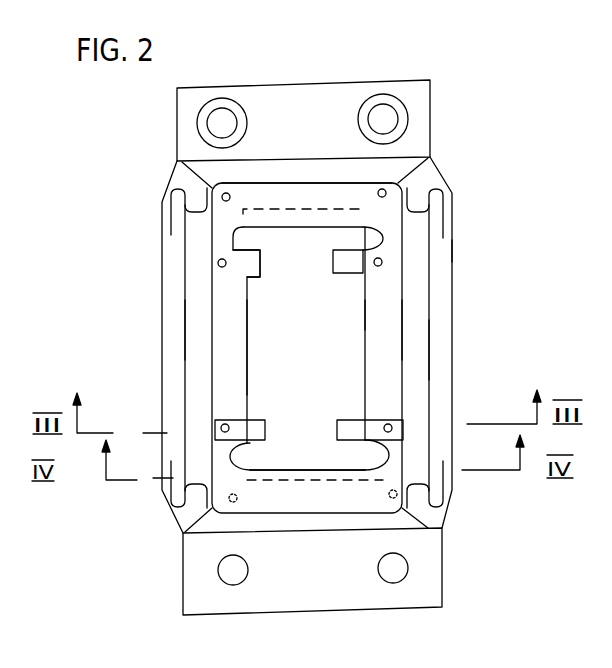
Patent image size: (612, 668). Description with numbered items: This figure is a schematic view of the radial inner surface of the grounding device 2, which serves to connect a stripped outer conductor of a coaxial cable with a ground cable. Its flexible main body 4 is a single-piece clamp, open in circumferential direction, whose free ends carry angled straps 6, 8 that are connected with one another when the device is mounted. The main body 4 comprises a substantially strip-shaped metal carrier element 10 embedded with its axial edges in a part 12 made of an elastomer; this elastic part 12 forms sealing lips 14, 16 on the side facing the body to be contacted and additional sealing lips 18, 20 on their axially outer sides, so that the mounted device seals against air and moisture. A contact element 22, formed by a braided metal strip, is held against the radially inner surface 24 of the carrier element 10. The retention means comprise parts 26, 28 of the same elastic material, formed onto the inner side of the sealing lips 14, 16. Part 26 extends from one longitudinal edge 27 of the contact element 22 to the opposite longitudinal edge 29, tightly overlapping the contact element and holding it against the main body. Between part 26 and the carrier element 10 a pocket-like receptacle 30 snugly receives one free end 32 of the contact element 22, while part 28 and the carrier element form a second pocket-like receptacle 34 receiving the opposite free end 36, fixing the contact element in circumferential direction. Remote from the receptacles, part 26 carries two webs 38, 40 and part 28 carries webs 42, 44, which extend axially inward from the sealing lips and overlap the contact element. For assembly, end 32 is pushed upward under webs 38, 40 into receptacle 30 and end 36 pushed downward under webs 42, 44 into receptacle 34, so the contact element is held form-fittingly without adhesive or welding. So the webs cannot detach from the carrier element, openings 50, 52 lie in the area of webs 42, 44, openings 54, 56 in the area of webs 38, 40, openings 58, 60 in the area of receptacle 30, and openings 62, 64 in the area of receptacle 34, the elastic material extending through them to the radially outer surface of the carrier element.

The device 2 is at (466, 76).
The main body 4 is at (449, 177).
The angled strap 6 is at (341, 98).
The angled strap 8 is at (360, 593).
The carrier element 10 is at (225, 347).
The part made of elastic material 12 is at (453, 252).
The sealing lip 14 is at (205, 331).
The sealing lip 16 is at (418, 352).
The additional sealing lip 18 is at (165, 227).
The additional sealing lip 20 is at (441, 230).
The contact element 22 is at (318, 361).
The radially inner surface 24 is at (388, 330).
The part of retention means 26 is at (333, 197).
The longitudinal edge 27 is at (363, 312).
The part of retention means 28 is at (275, 498).
The longitudinal edge 29 is at (252, 310).
The pocket-like receptacle 30 is at (315, 235).
The free end 32 is at (291, 207).
The pocket-like receptacle 34 is at (298, 464).
The free end 36 is at (303, 484).
The web 38 is at (250, 275).
The web 40 is at (350, 270).
The web 42 is at (250, 425).
The web 44 is at (395, 405).
The opening 50 is at (222, 429).
The opening 52 is at (392, 431).
The opening 54 is at (220, 264).
The opening 56 is at (383, 234).
The opening 58 is at (218, 192).
The opening 60 is at (432, 156).
The opening 62 is at (233, 498).
The opening 64 is at (396, 496).